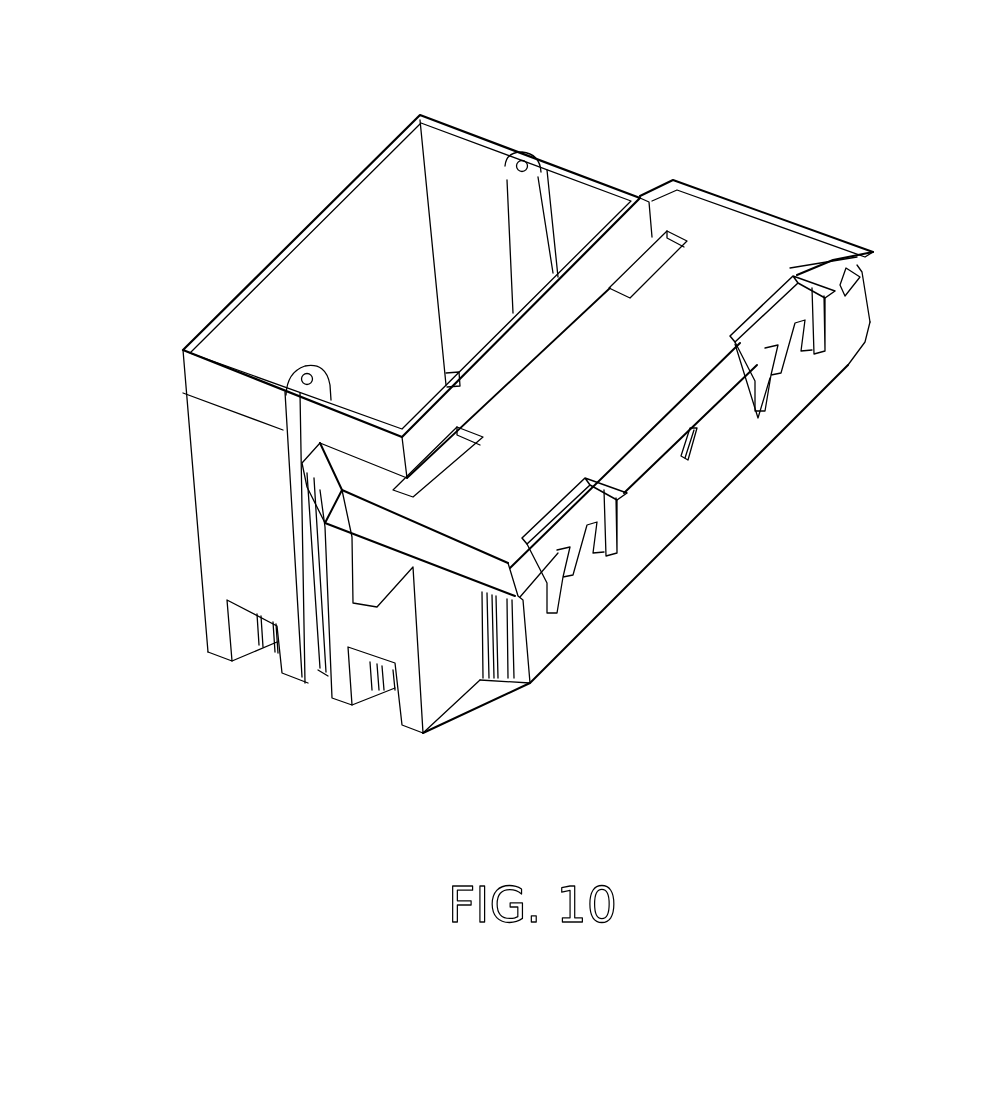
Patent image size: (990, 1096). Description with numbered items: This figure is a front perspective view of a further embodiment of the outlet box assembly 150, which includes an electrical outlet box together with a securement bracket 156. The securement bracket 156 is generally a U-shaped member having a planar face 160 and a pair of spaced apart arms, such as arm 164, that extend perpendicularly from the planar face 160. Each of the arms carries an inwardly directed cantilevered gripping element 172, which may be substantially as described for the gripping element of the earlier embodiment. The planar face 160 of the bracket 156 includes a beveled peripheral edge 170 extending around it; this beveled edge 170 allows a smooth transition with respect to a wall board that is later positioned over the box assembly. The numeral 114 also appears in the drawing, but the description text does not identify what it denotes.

The box-shaped receptacle 114 is at (467, 160).
The housing 150 is at (633, 143).
The platform 156 is at (747, 243).
The front wall 160 is at (523, 452).
The latch projection 164 is at (700, 402).
The ledge 170 is at (427, 547).
The retaining clip 172 is at (787, 357).